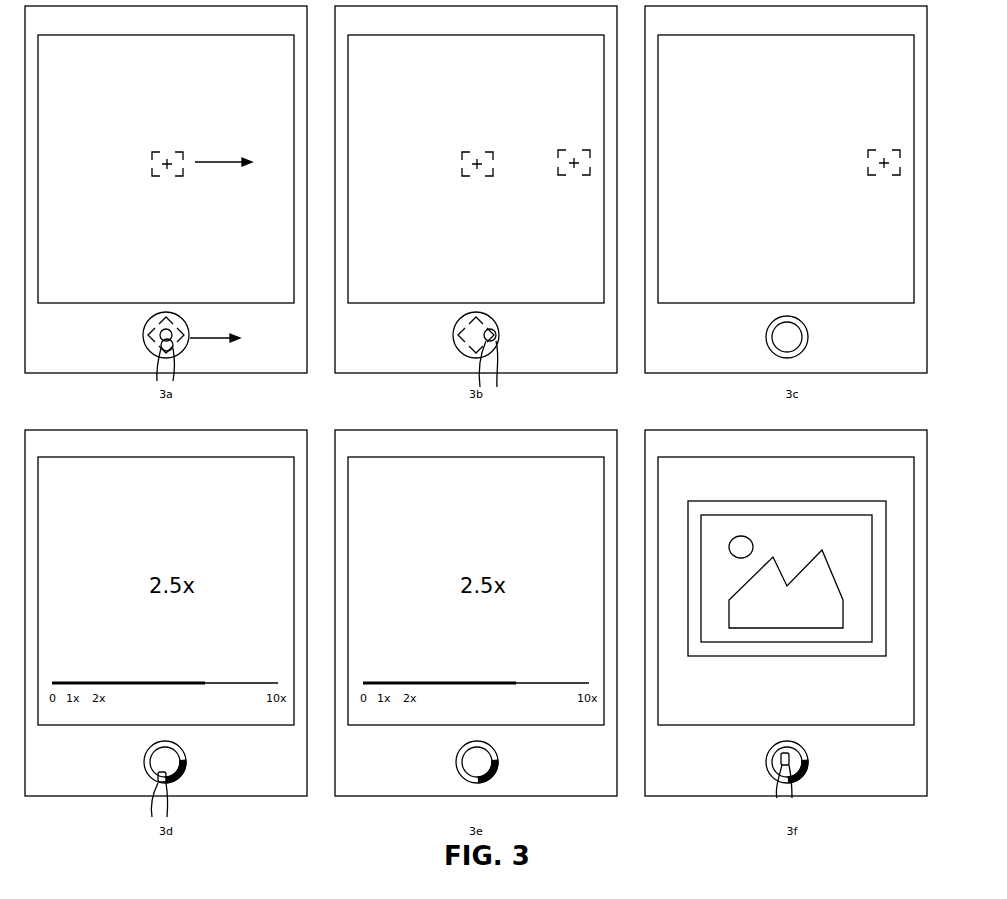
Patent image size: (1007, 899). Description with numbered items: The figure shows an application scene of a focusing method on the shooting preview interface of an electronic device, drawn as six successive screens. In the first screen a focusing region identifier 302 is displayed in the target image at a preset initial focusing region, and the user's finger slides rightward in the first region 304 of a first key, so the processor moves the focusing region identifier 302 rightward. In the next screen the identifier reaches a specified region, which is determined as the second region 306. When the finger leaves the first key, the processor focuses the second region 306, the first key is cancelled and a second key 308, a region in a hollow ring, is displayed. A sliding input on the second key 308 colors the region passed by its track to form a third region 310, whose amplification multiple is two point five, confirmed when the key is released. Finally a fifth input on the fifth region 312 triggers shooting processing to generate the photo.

The focusing region identifier 302 is at (178, 151).
The first region 304 is at (189, 334).
The second region 306 is at (567, 150).
The second key 308 is at (809, 338).
The third region 310 is at (187, 773).
The fifth region 312 is at (790, 752).